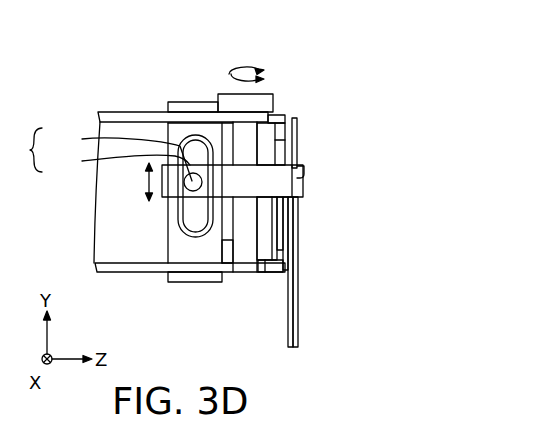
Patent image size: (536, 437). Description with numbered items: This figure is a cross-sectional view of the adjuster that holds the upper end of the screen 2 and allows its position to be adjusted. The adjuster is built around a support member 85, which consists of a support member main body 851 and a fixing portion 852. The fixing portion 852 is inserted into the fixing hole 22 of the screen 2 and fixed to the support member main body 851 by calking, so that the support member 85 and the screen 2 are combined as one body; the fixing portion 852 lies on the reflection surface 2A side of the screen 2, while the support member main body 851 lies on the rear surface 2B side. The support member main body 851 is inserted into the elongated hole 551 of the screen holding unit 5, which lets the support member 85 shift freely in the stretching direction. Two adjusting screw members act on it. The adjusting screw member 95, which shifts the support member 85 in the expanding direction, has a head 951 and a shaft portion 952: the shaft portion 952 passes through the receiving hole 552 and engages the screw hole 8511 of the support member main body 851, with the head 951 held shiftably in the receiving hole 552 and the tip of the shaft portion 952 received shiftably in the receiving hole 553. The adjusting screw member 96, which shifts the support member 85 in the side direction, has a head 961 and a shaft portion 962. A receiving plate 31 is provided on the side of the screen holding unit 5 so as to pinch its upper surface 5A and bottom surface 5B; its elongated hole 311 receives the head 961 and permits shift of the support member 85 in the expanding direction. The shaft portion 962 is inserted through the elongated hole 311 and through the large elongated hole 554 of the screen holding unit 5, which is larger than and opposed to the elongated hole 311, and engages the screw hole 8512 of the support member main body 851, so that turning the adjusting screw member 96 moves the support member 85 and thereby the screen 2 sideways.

The screen 2 is at (299, 132).
The reflection surface 2A is at (299, 325).
The rear surface 2B is at (291, 297).
The fixing hole 22 is at (304, 172).
The screen holding unit 5 is at (104, 112).
The upper surface 5A is at (131, 112).
The bottom surface 5B is at (128, 274).
The receiving plate 31 is at (185, 102).
The elongated hole 311 is at (182, 232).
The support member 85 is at (318, 183).
The support member main body 851 is at (279, 195).
The screw hole 8511 is at (286, 198).
The screw hole 8512 is at (191, 191).
The fixing portion 852 is at (304, 192).
The adjusting screw member 95 is at (277, 79).
The head 951 is at (228, 94).
The shaft portion 952 is at (222, 243).
The adjusting screw member 96 is at (22, 150).
The head 961 is at (117, 154).
The shaft portion 962 is at (116, 159).
The elongated hole 551 is at (290, 213).
The receiving hole 552 is at (274, 118).
The receiving hole 553 is at (265, 271).
The large elongated hole 554 is at (188, 250).